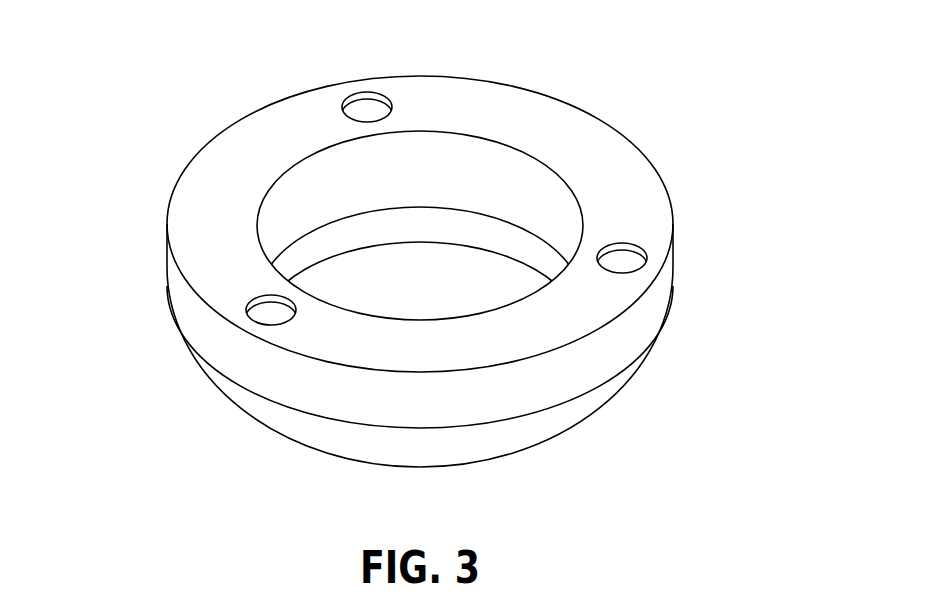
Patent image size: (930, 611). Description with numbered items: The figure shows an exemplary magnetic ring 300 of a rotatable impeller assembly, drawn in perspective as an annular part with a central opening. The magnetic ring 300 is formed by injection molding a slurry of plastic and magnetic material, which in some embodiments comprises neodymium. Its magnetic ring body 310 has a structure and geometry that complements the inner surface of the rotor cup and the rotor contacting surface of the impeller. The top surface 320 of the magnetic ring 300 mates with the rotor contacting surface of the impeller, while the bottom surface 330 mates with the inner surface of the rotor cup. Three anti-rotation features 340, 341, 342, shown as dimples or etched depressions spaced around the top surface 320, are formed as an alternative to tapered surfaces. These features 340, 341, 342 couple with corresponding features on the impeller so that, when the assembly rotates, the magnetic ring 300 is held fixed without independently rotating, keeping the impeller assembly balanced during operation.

The magnetic ring 300 is at (668, 82).
The magnetic ring body 310 is at (608, 352).
The top surface 320 is at (215, 232).
The bottom surface 330 is at (300, 420).
The anti-rotation feature 340 is at (369, 113).
The anti-rotation feature 341 is at (266, 310).
The anti-rotation feature 342 is at (625, 260).